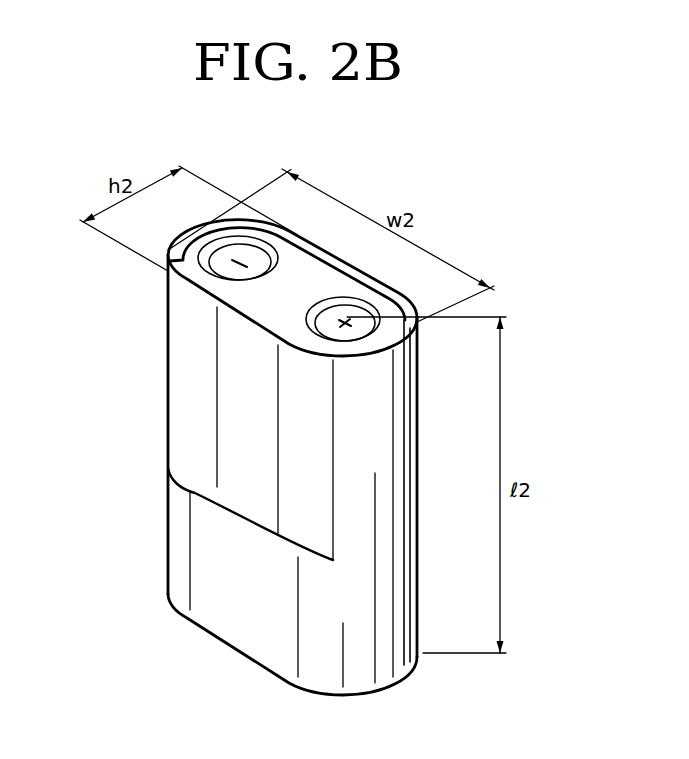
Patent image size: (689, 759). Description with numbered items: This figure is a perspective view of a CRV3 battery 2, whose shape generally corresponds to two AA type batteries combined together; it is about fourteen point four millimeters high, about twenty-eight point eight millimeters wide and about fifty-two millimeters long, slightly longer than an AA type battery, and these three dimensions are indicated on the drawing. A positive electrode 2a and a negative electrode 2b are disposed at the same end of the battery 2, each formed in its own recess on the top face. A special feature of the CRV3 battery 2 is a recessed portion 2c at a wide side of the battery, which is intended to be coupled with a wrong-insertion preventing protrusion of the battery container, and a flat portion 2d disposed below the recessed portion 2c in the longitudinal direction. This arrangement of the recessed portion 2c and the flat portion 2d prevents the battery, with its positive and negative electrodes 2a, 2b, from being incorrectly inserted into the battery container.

The CRV3 battery 2 is at (120, 625).
The positive electrode 2a is at (312, 327).
The negative electrode 2b is at (222, 275).
The recessed portion 2c is at (252, 457).
The flat portion 2d is at (242, 605).